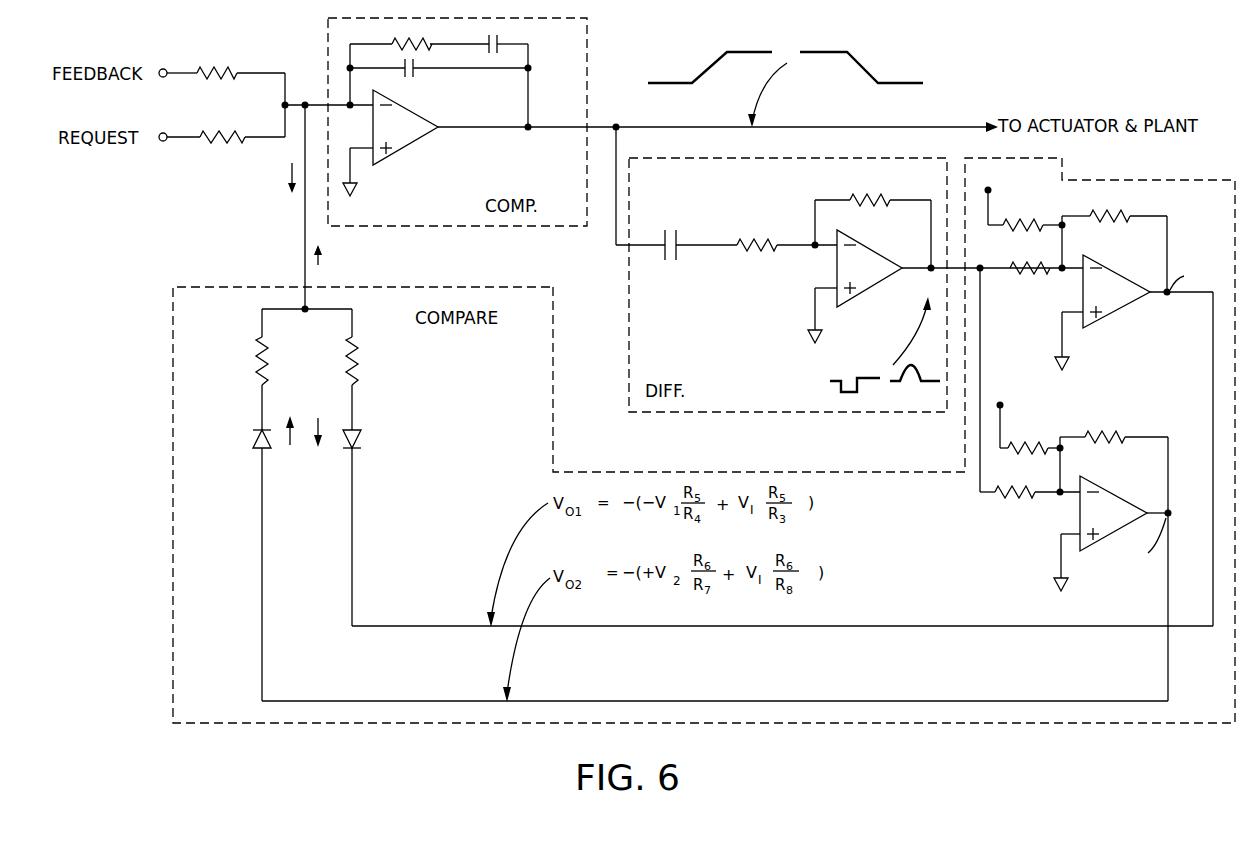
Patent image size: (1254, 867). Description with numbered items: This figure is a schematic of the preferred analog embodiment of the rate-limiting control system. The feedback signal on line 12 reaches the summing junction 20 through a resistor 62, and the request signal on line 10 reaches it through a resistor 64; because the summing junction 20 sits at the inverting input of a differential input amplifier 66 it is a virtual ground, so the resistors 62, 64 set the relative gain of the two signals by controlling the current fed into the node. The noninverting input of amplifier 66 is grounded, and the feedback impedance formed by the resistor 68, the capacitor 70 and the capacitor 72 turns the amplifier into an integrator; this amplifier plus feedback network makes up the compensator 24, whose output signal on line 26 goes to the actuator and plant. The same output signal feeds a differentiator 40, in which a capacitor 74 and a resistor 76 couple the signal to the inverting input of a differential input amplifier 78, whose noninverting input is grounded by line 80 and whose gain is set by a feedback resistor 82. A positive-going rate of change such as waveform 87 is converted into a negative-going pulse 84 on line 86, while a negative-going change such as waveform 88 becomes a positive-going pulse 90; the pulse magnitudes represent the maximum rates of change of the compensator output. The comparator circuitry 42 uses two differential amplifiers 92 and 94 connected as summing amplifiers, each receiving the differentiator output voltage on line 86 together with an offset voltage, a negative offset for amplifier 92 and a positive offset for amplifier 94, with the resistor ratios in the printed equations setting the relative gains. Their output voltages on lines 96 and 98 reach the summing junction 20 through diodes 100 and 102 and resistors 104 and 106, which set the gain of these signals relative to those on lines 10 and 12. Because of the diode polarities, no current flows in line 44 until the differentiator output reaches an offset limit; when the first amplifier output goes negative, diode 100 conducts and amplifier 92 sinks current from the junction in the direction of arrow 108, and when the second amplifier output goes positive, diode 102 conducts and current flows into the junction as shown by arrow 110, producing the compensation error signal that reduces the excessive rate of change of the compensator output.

The request signal line 10 is at (172, 141).
The feedback signal line 12 is at (172, 77).
The summing junction 20 is at (306, 100).
The compensator 24 is at (587, 40).
The compensator output line 26 is at (668, 127).
The differentiator 40 is at (672, 412).
The comparator circuitry 42 is at (810, 472).
The compensation error signal line 44 is at (305, 241).
The feedback resistor 62 is at (233, 77).
The request resistor 64 is at (232, 142).
The differential input amplifier 66 is at (406, 151).
The feedback resistor 68 is at (368, 185).
The feedback capacitor 70 is at (486, 55).
The feedback capacitor 72 is at (404, 82).
The differentiator capacitor 74 is at (672, 262).
The differentiator resistor 76 is at (755, 253).
The differential input amplifier 78 is at (862, 290).
The ground line 80 is at (812, 308).
The feedback resistor 82 is at (868, 207).
The negative-going pulse 84 is at (843, 390).
The differentiator output line 86 is at (934, 272).
The positive-going rate of change 87 is at (717, 60).
The negative-going rate of change 88 is at (866, 55).
The positive-going pulse 90 is at (915, 383).
The differential amplifier 92 is at (1112, 318).
The differential amplifier 94 is at (1098, 548).
The output line of amplifier 92 96 is at (932, 626).
The output line of amplifier 94 98 is at (932, 701).
The diode 100 is at (344, 447).
The diode 102 is at (256, 448).
The resistor 104 is at (258, 372).
The resistor 106 is at (352, 337).
The current flow arrow 108 is at (288, 164).
The current flow arrow 110 is at (320, 266).